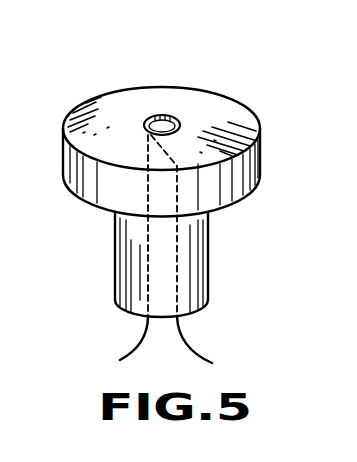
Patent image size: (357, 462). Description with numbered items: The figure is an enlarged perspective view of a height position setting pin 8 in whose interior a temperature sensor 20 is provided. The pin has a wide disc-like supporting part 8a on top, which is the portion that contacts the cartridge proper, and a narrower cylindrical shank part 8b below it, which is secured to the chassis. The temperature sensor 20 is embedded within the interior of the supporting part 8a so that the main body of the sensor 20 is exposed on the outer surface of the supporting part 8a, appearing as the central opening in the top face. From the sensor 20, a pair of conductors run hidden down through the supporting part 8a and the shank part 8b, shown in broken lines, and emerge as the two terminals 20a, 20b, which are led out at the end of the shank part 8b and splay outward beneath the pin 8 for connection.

The height position setting pin 8 is at (262, 154).
The supporting part 8a is at (205, 102).
The shank part 8b is at (197, 263).
The temperature sensor 20 is at (152, 119).
The terminal of the temperature sensor 20a is at (142, 338).
The terminal of the temperature sensor 20b is at (195, 347).